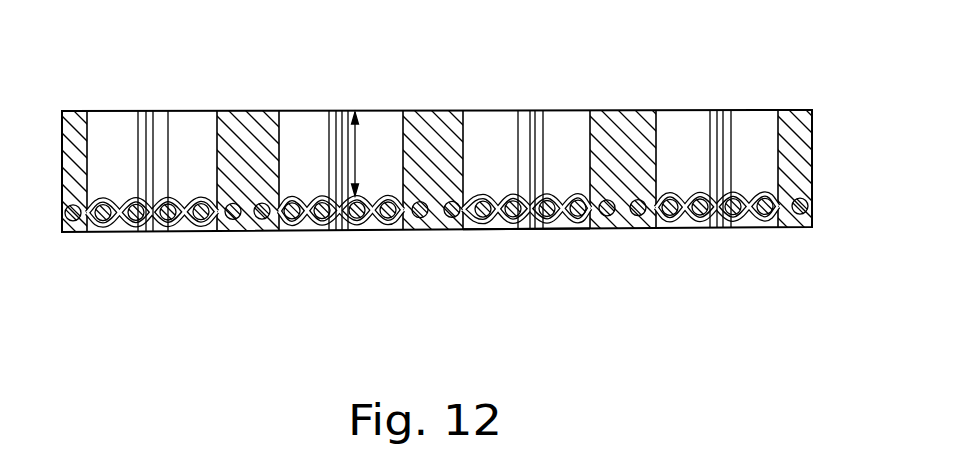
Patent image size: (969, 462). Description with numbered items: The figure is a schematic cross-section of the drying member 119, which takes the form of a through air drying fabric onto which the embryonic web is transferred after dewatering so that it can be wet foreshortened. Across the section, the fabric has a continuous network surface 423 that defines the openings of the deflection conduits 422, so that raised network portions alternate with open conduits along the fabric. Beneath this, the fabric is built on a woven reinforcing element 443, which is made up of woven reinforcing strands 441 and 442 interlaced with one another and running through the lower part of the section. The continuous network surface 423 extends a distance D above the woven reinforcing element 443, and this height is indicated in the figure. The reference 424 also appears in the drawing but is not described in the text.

The drying member 119 is at (689, 87).
The deflection conduits 422 is at (177, 125).
The continuous network surface 423 is at (255, 113).
The embedded elements in block 424 is at (259, 232).
The woven reinforcing strands 441 is at (165, 226).
The woven reinforcing strands 442 is at (77, 222).
The woven reinforcing element 443 is at (531, 239).
The distance D is at (360, 122).